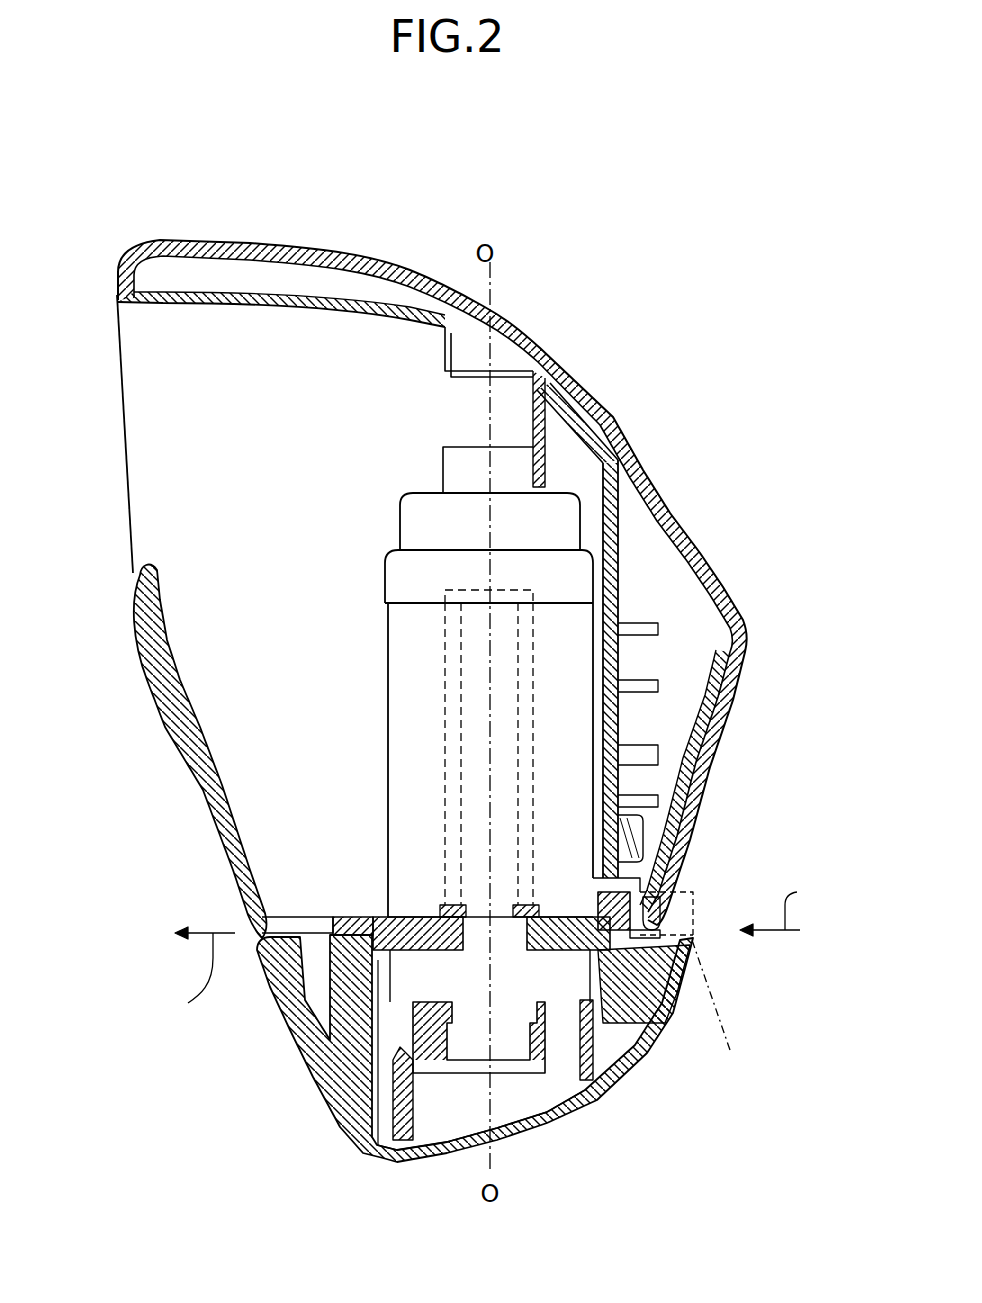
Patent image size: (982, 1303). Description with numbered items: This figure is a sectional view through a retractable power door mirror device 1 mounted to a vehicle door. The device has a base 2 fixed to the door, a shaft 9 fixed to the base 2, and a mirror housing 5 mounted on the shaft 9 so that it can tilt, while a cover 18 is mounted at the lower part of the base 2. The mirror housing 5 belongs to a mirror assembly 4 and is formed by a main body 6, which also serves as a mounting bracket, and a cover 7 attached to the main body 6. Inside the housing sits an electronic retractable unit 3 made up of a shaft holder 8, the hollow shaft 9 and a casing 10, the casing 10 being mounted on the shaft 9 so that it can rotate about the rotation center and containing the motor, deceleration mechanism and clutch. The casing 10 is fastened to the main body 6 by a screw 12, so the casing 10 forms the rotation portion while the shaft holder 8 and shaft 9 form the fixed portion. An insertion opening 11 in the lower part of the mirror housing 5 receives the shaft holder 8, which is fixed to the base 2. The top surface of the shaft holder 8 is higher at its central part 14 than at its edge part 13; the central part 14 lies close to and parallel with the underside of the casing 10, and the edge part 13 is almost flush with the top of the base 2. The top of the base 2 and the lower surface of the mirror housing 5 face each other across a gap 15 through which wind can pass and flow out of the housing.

The retractable power door mirror device 1 is at (614, 282).
The base 2 is at (290, 1040).
The electronic retractable unit 3 is at (604, 545).
The mirror assembly 4 is at (117, 258).
The mirror housing 5 is at (312, 150).
The main body 6 is at (236, 293).
The cover 7 is at (215, 240).
The shaft holder 8 is at (380, 917).
The shaft 9 is at (445, 703).
The casing 10 is at (387, 645).
The insertion opening 11 is at (338, 917).
The screw 12 is at (645, 832).
The edge part 13 is at (366, 917).
The central part 14 is at (393, 915).
The gap 15 is at (672, 935).
The cover 18 is at (553, 1118).